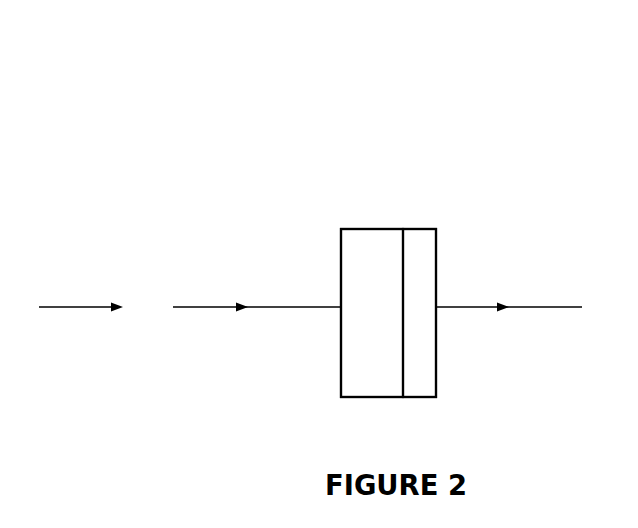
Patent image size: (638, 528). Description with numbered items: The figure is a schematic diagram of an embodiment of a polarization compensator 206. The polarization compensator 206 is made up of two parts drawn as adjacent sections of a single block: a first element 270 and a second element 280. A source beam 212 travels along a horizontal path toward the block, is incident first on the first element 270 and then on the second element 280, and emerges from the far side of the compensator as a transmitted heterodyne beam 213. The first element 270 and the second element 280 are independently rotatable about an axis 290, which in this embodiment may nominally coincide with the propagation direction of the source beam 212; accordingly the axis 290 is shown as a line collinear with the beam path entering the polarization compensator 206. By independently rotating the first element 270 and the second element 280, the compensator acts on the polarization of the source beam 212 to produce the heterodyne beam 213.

The polarization compensator 206 is at (479, 100).
The first element 270 is at (374, 229).
The second element 280 is at (421, 229).
The axis 290 is at (72, 307).
The source beam 212 is at (197, 307).
The heterodyne beam 213 is at (541, 307).